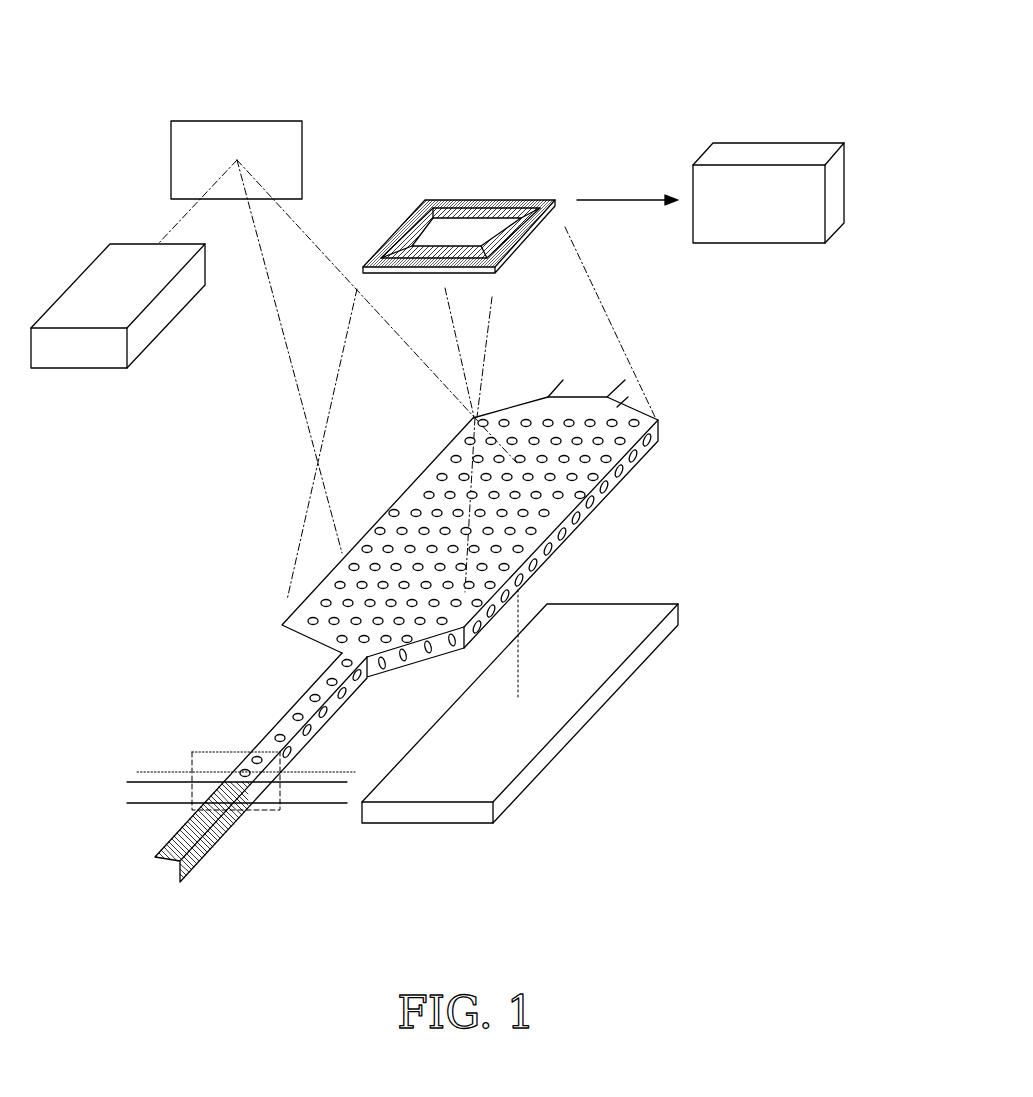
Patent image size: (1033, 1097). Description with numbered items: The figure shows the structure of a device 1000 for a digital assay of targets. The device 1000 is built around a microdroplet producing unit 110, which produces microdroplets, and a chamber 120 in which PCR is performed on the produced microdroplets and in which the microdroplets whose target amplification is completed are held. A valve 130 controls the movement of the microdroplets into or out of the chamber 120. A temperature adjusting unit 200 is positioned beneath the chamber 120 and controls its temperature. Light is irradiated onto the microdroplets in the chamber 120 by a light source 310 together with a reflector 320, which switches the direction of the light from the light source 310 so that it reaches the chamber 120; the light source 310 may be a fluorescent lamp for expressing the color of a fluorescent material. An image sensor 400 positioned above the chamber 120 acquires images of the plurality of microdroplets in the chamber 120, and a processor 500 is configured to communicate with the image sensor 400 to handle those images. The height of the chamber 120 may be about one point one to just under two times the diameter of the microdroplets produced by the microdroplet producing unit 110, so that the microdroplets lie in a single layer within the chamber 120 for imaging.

The device for a digital assay of targets 1000 is at (843, 33).
The microdroplet producing unit 110 is at (255, 812).
The chamber 120 is at (658, 421).
The valve 130 is at (552, 392).
The temperature adjusting unit 200 is at (430, 825).
The light source 310 is at (87, 368).
The reflector 320 is at (237, 120).
The image sensor 400 is at (473, 197).
The processor 500 is at (760, 142).